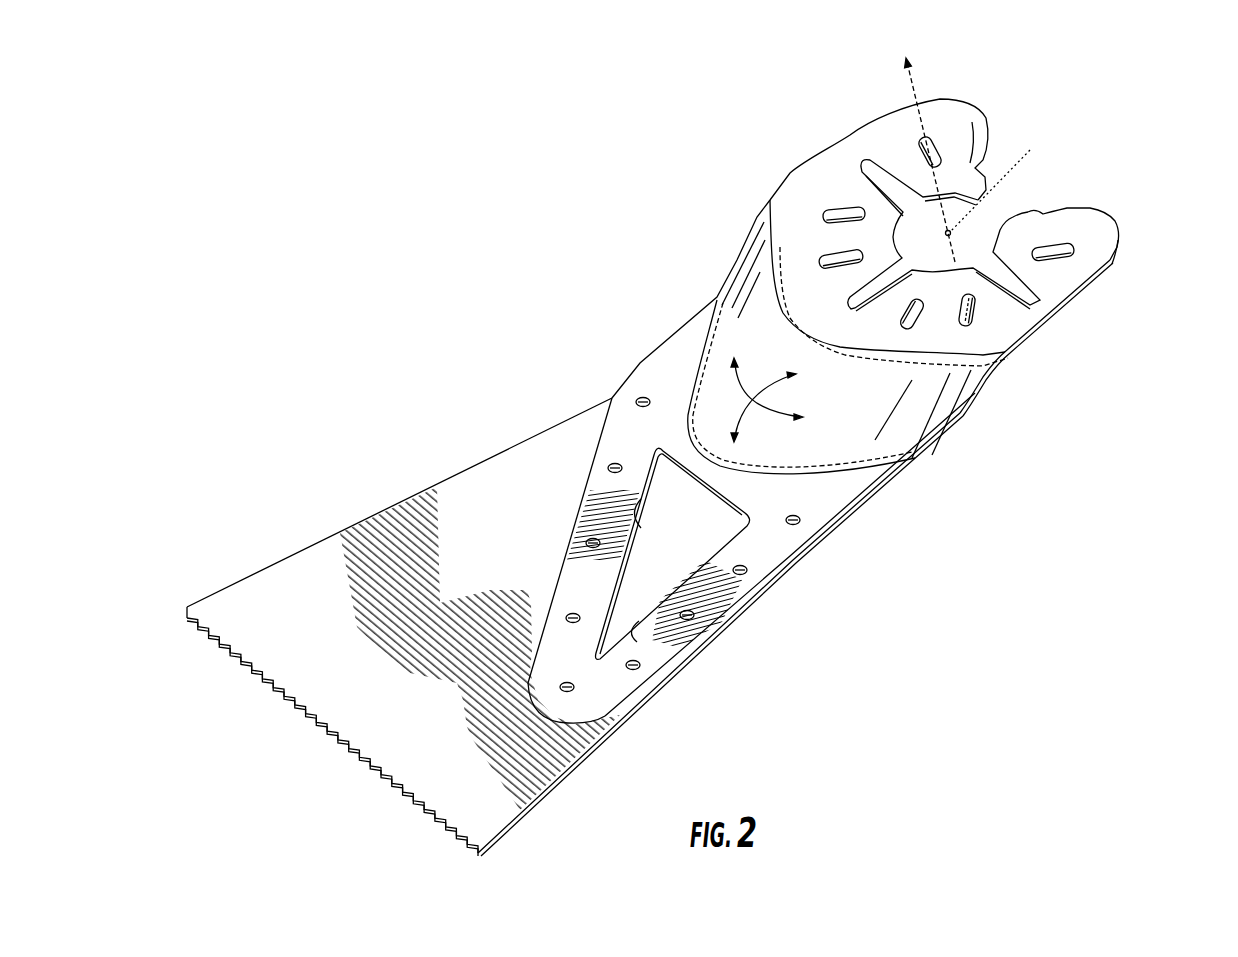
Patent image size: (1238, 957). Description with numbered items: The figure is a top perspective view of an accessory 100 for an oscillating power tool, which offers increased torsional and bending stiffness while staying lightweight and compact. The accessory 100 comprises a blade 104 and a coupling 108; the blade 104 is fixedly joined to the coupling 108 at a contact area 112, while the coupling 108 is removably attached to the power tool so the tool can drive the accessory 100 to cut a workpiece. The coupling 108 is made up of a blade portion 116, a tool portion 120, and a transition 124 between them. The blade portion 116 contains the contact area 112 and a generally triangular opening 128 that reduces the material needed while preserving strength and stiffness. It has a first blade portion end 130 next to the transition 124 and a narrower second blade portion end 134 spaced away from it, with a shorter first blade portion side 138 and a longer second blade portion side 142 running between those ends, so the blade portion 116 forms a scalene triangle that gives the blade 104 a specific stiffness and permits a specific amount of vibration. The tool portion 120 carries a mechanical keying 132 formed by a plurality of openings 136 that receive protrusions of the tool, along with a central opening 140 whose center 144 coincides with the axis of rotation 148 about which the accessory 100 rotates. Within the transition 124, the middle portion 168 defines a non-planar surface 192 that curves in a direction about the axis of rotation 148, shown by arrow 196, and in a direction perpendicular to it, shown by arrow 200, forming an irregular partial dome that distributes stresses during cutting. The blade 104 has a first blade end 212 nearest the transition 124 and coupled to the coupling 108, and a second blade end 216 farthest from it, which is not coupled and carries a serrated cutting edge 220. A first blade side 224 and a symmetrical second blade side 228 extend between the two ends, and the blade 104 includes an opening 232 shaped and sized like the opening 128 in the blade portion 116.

The accessory 100 is at (652, 465).
The blade 104 is at (533, 767).
The coupling 108 is at (983, 393).
The contact area 112 is at (707, 643).
The blade portion 116 is at (787, 537).
The tool portion 120 is at (1047, 313).
The transition 124 is at (903, 437).
The opening 128 is at (637, 640).
The first blade portion end 130 is at (853, 490).
The mechanical keying 132 is at (1082, 192).
The second blade portion end 134 is at (597, 703).
The openings 136 is at (877, 182).
The first blade portion side 138 is at (743, 610).
The central opening 140 is at (1010, 215).
The second blade portion side 142 is at (550, 587).
The center 144 is at (950, 230).
The axis of rotation 148 is at (997, 180).
The middle portion 168 is at (728, 268).
The surface 192 is at (868, 419).
The arrow 196 is at (780, 420).
The arrow 200 is at (766, 374).
The first blade end 212 is at (832, 540).
The second blade end 216 is at (228, 603).
The cutting edge 220 is at (397, 797).
The first blade side 224 is at (780, 577).
The second blade side 228 is at (393, 507).
The opening 232 is at (592, 484).